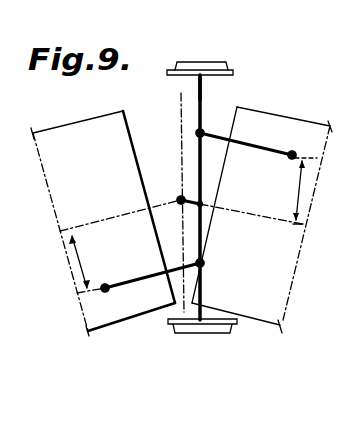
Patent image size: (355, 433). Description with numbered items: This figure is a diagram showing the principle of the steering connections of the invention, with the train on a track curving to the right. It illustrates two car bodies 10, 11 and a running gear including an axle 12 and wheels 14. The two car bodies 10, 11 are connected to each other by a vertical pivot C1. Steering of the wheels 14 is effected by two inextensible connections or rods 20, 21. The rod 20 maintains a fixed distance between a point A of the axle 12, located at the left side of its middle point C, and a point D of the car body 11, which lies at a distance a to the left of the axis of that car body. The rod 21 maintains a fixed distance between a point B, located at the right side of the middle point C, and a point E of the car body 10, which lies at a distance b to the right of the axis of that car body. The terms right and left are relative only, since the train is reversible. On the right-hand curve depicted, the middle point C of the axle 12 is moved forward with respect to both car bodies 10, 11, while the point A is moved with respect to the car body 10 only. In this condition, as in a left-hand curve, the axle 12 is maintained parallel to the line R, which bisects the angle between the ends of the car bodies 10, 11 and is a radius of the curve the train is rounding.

The car body 10 is at (92, 108).
The car body 11 is at (302, 122).
The axle 12 is at (203, 92).
The wheels 14 is at (207, 62).
The rod 20 is at (263, 147).
The rod 21 is at (145, 270).
The line bisecting the angle between the car bodies R is at (182, 115).
The point of the axle A is at (203, 131).
The point of the axle B is at (203, 262).
The middle point of the axle C is at (204, 203).
The vertical pivot C1 is at (179, 198).
The point of the car body D is at (296, 152).
The point of the car body E is at (108, 292).
The distance a is at (299, 192).
The distance b is at (79, 262).